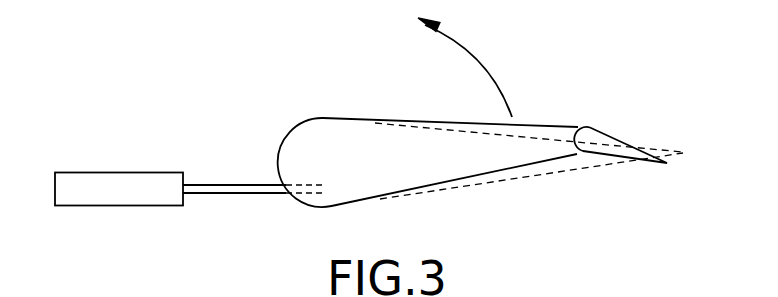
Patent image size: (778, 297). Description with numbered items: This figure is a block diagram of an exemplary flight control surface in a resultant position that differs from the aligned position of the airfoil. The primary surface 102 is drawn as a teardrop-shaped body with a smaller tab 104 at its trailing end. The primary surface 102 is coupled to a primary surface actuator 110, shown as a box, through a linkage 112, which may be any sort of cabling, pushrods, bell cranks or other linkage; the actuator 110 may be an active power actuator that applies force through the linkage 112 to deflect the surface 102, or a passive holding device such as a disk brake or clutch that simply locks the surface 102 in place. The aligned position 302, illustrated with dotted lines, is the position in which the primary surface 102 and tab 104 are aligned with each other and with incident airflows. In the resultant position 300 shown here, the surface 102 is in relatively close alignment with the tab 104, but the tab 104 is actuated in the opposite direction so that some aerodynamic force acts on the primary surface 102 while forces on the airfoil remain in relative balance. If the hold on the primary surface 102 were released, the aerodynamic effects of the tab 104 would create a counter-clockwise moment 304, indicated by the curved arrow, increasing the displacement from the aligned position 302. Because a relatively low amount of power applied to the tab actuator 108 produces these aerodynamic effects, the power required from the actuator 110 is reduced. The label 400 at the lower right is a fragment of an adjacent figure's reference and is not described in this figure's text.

The primary surface 102 is at (367, 166).
The tab 104 is at (602, 139).
The actuator 108 is at (516, 151).
The primary surface actuator 110 is at (137, 202).
The linkage 112 is at (232, 189).
The position 300 is at (667, 80).
The aligned position 302 is at (527, 167).
The counter-clockwise moment 304 is at (478, 61).
The system of next figure 400 is at (697, 296).